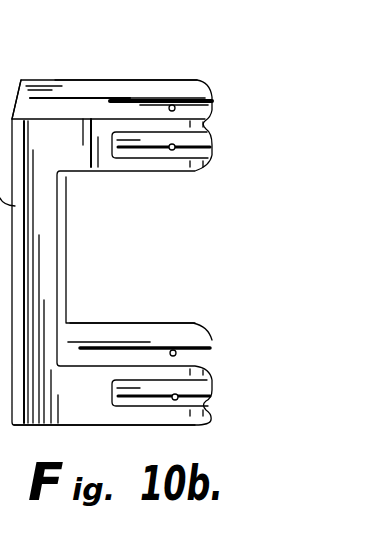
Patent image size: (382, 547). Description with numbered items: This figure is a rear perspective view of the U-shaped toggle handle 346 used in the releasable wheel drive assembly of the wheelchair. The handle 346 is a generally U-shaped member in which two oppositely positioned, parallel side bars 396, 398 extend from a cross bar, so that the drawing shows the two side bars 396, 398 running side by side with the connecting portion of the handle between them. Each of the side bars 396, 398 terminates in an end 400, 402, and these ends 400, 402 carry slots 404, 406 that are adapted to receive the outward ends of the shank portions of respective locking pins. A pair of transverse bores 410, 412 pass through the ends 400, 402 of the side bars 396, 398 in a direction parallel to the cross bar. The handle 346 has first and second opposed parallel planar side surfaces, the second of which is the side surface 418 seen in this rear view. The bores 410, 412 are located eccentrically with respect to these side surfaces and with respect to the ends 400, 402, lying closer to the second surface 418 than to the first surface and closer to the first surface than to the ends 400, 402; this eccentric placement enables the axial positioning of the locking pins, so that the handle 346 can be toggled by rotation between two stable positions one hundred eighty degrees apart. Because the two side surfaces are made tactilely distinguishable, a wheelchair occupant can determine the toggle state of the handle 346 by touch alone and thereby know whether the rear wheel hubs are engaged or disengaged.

The handle 346 is at (106, 222).
The side bar 396 is at (92, 92).
The side bar 398 is at (86, 405).
The end 400 is at (212, 102).
The end 402 is at (212, 348).
The slot 404 is at (211, 136).
The slot 406 is at (207, 405).
The transverse bore 410 is at (172, 147).
The transverse bore 412 is at (175, 397).
The second planar side surface 418 is at (47, 258).